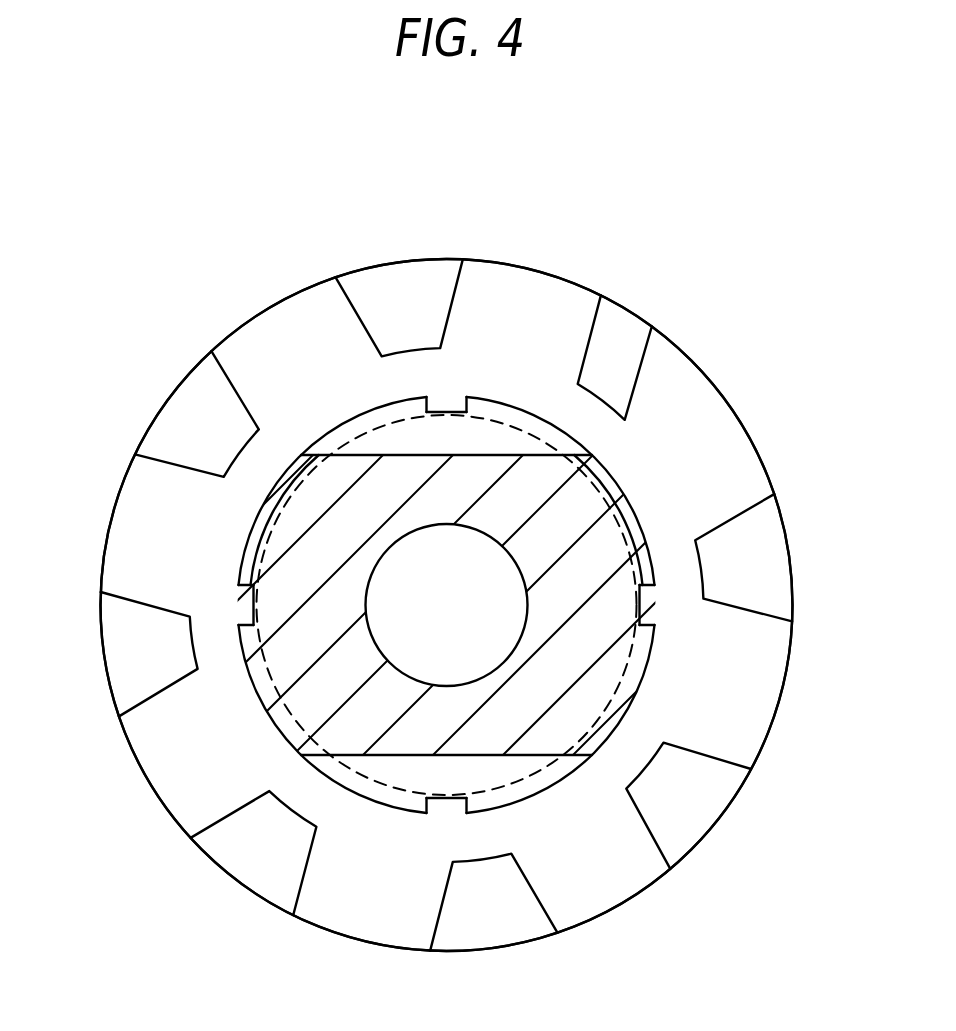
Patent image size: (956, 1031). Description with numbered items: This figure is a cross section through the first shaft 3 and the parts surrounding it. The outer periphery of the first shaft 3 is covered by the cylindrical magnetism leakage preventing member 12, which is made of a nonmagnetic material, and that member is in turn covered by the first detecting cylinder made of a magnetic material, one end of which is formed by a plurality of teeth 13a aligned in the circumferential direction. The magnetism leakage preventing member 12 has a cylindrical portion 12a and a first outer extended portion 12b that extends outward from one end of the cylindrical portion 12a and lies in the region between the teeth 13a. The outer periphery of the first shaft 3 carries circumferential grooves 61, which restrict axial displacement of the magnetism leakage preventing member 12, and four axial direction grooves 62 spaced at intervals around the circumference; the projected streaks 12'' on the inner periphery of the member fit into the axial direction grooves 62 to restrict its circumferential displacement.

The magnetism leakage preventing member 12 is at (464, 605).
The cylindrical portion 12a is at (593, 418).
The first outer extended portion 12b is at (542, 313).
The projected streaks 12'' is at (446, 622).
The teeth 13a is at (417, 303).
The axial direction grooves 62 is at (468, 402).
The first shaft 3 is at (587, 512).
The circumferential grooves 61 is at (262, 528).